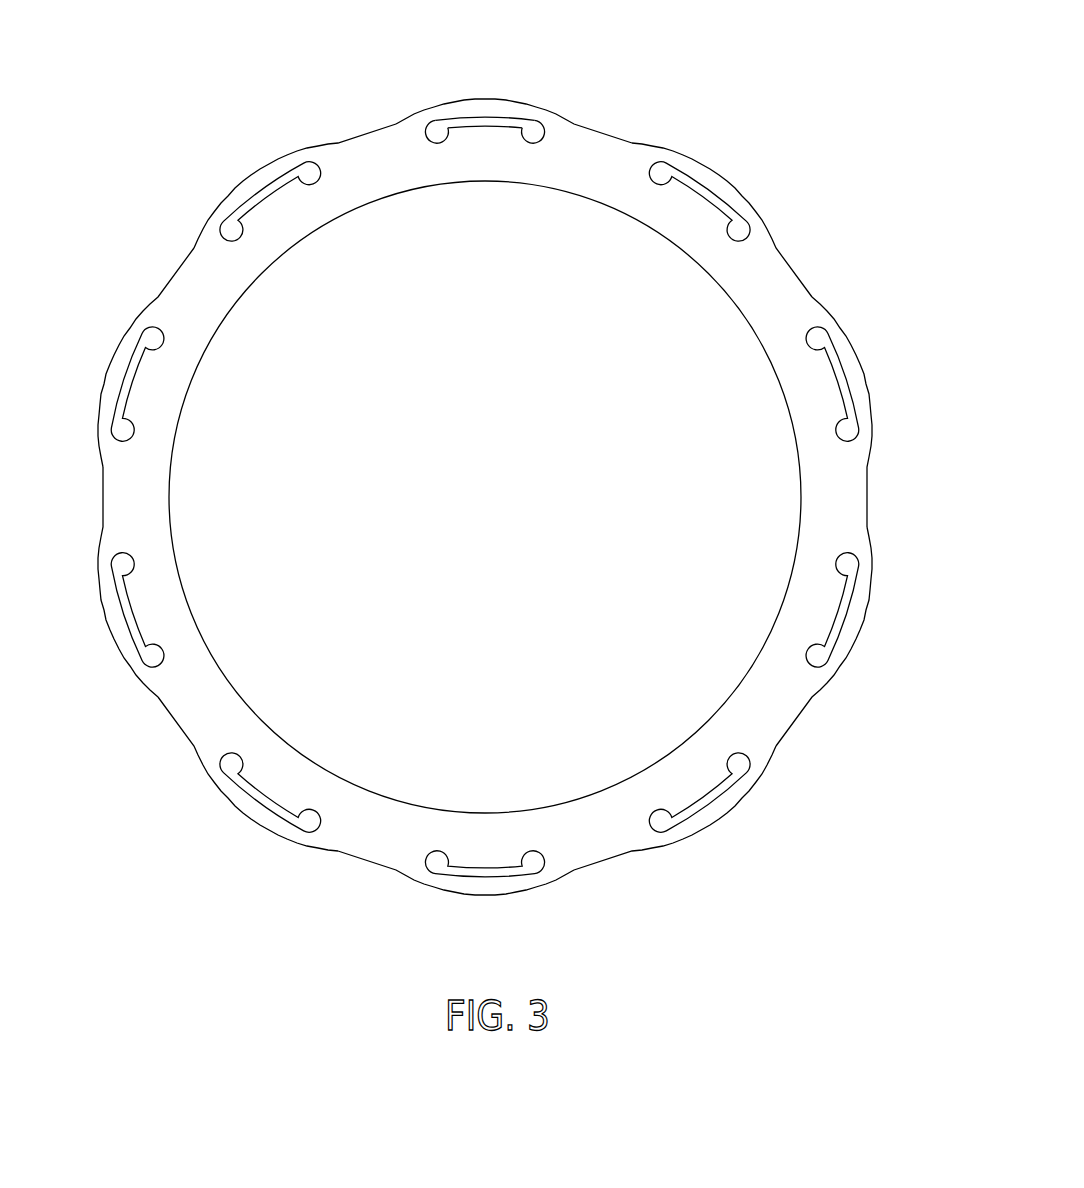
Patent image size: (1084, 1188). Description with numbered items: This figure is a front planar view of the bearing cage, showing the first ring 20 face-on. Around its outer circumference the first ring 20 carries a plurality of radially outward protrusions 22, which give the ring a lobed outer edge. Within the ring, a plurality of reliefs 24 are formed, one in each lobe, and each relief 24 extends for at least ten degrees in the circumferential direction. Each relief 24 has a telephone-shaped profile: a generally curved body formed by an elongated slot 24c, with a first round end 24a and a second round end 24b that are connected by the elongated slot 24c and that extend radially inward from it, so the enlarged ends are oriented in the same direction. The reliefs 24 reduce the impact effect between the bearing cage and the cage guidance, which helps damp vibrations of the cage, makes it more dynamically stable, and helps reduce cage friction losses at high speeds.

The first ring 20 is at (499, 497).
The radially outward protrusion 22 is at (862, 635).
The relief 24 is at (605, 229).
The first round end 24a is at (361, 109).
The second round end 24b is at (603, 110).
The elongated slot 24c is at (488, 71).